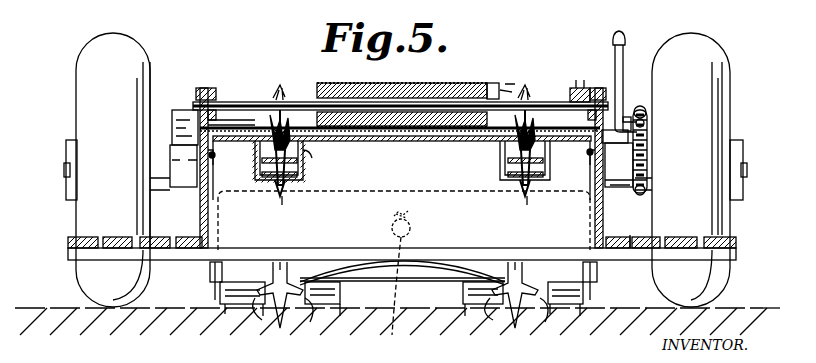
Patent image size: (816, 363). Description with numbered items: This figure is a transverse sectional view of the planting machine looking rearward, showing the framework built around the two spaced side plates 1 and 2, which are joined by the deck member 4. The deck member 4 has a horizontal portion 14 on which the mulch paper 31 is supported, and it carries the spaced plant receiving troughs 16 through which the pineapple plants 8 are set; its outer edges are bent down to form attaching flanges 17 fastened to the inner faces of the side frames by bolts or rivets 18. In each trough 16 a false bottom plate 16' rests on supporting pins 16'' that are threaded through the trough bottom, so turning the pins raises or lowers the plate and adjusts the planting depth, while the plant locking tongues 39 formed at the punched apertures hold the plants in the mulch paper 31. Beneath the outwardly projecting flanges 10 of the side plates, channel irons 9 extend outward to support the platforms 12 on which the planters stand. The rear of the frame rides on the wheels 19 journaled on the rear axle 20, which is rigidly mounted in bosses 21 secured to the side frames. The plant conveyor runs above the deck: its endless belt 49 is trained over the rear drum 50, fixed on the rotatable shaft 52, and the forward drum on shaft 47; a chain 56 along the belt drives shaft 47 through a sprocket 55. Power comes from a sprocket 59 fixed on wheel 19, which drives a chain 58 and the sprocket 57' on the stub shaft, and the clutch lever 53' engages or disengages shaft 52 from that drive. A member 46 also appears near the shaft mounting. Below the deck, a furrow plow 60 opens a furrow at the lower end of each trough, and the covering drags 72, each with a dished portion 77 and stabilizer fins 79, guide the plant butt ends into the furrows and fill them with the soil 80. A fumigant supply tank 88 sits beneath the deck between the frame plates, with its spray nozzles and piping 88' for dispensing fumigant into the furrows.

The side plate 1 is at (205, 88).
The side plate 2 is at (598, 88).
The deck member 4 is at (441, 151).
The pineapple plants 8 is at (280, 85).
The channel irons 9 is at (70, 258).
The outwardly projecting flanges 10 is at (190, 238).
The platforms 12 is at (66, 236).
The horizontal portion 14 is at (392, 143).
The plant receiving troughs 16 is at (402, 182).
The false bottom plate 16' is at (402, 160).
The supporting pins 16'' is at (404, 209).
The attaching flanges 17 is at (213, 162).
The bolts or rivets 18 is at (215, 155).
The wheels 19 is at (72, 73).
The rear axle 20 is at (66, 172).
The bosses 21 is at (191, 177).
The mulch paper 31 is at (308, 152).
The plant locking tongues 39 is at (277, 188).
The bar support block 46 is at (583, 88).
The shaft 47 is at (553, 102).
The endless belt 49 is at (455, 84).
The rear drum 50 is at (433, 90).
The rotatable shaft 52 is at (230, 128).
The clutch lever 53' is at (608, 71).
The sprocket 55 is at (492, 86).
The chain 56 is at (512, 90).
The sprocket 57' is at (640, 113).
The chain 58 is at (647, 130).
The sprocket 59 is at (648, 182).
The furrow plow 60 is at (305, 280).
The covering drags 72 is at (340, 288).
The dished portion 77 is at (283, 320).
The stabilizer fins 79 is at (222, 312).
The soil 80 is at (258, 318).
The fumigant supply tank 88 is at (410, 221).
The spray nozzles and piping 88' is at (404, 298).